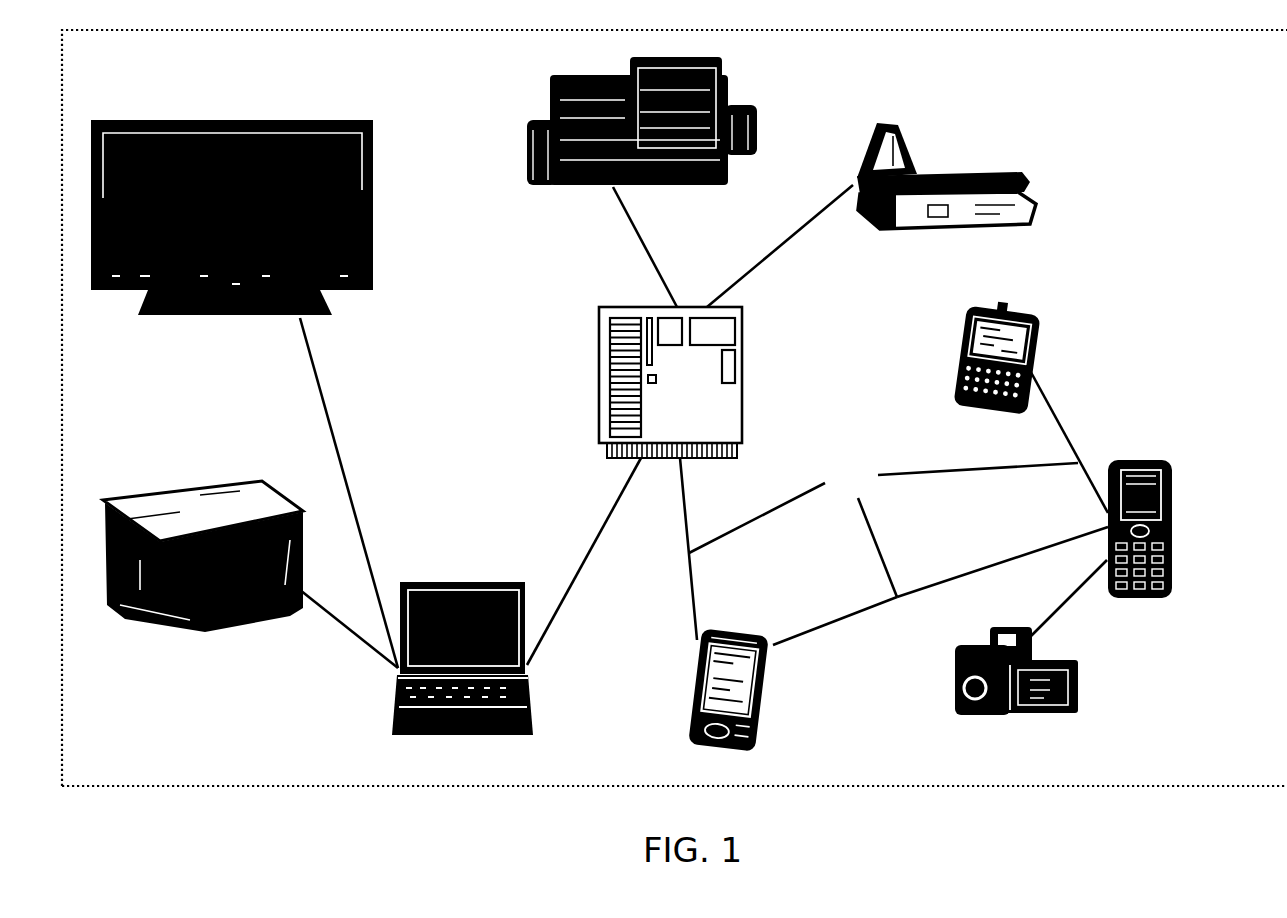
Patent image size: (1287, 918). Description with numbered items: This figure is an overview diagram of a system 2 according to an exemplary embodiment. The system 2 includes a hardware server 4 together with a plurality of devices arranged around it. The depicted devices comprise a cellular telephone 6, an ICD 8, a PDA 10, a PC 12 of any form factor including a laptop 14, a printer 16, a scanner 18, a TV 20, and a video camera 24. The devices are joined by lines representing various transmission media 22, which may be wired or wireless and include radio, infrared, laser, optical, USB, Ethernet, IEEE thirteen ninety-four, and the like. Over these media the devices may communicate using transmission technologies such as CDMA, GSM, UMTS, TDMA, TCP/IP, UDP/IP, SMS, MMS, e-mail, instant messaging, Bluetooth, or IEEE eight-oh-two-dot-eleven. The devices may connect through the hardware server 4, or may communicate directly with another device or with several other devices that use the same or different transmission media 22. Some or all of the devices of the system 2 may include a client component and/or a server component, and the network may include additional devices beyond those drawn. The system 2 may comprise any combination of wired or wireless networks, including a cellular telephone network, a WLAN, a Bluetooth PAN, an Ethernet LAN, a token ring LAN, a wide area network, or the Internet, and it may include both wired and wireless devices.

The system 2 is at (674, 408).
The hardware server 4 is at (598, 367).
The cellular telephone 6 is at (1170, 548).
The ICD 8 is at (1040, 318).
The PDA 10 is at (768, 700).
The PC 12 is at (545, 97).
The laptop 14 is at (392, 675).
The printer 16 is at (187, 481).
The scanner 18 is at (1023, 150).
The TV 20 is at (168, 117).
The transmission media 22 is at (334, 440).
The video camera 24 is at (1080, 691).